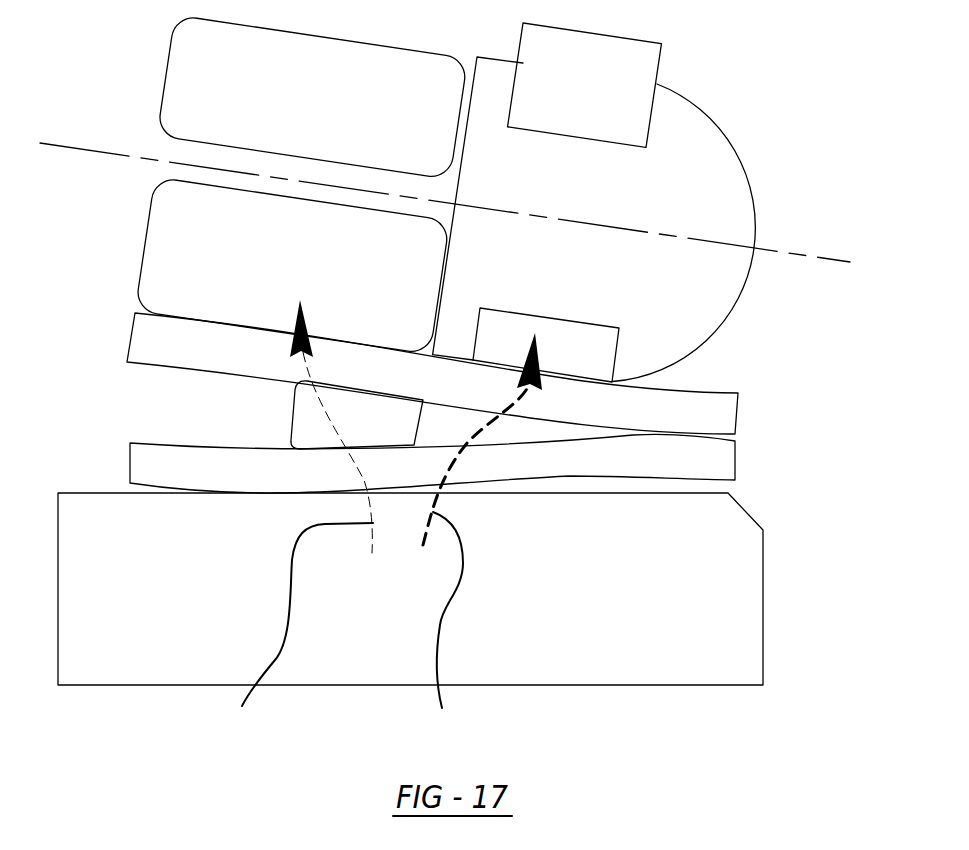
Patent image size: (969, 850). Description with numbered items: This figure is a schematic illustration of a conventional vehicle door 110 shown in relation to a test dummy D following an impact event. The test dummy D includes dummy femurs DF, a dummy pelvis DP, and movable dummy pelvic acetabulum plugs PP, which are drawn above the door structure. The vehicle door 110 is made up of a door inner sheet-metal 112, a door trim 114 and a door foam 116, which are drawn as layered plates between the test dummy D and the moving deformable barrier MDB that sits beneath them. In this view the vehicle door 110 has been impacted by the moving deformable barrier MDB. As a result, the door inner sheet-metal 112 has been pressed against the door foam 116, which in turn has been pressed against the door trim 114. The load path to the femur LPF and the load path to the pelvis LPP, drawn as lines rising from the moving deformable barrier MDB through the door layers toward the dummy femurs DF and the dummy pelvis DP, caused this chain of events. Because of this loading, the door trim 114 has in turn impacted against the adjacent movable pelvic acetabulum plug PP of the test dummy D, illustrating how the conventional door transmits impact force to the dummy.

The vehicle door 110 is at (387, 366).
The door inner sheet-metal 112 is at (140, 457).
The door trim 114 is at (148, 333).
The door foam 116 is at (297, 399).
The test dummy D is at (682, 128).
The dummy pelvis DP is at (678, 205).
The dummy femurs DF is at (326, 115).
The movable dummy pelvic acetabulum plug PP is at (607, 106).
The moving deformable barrier MDB is at (535, 622).
The load path to the femur LPF is at (286, 523).
The load path to the pelvis LPP is at (482, 538).